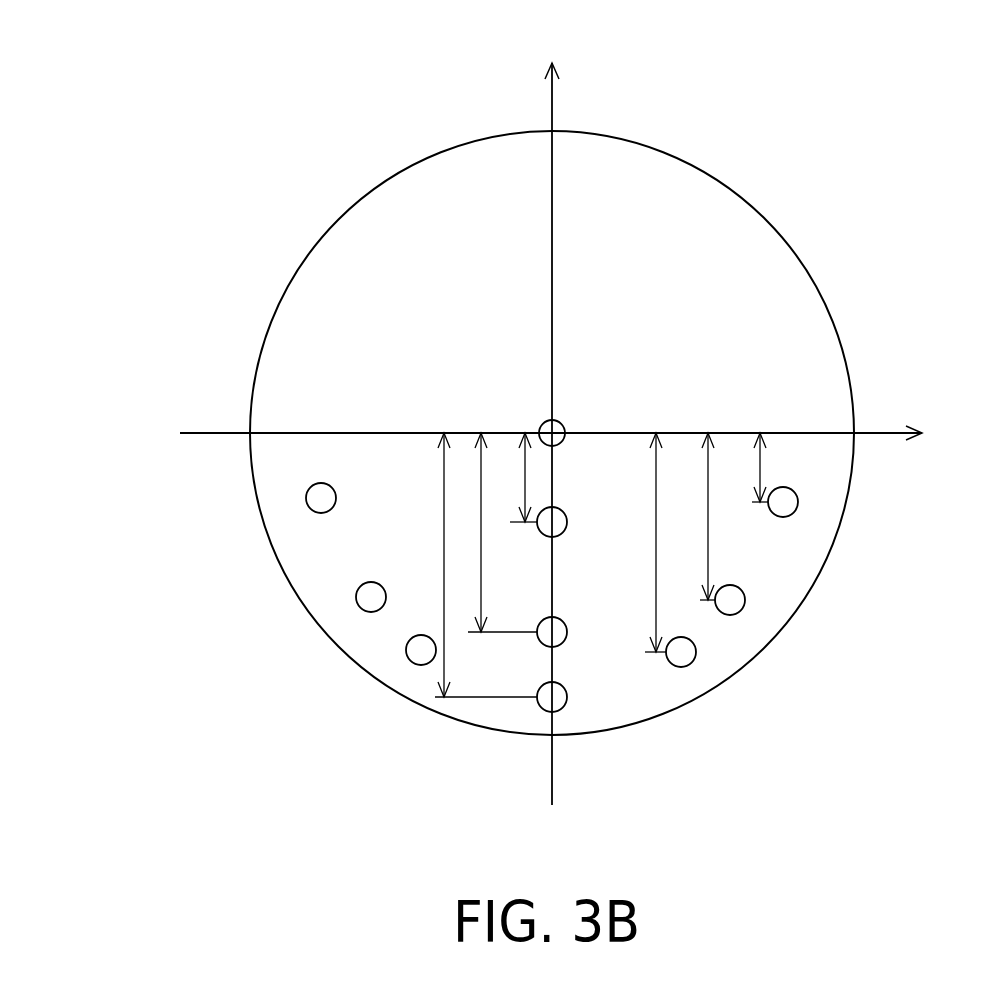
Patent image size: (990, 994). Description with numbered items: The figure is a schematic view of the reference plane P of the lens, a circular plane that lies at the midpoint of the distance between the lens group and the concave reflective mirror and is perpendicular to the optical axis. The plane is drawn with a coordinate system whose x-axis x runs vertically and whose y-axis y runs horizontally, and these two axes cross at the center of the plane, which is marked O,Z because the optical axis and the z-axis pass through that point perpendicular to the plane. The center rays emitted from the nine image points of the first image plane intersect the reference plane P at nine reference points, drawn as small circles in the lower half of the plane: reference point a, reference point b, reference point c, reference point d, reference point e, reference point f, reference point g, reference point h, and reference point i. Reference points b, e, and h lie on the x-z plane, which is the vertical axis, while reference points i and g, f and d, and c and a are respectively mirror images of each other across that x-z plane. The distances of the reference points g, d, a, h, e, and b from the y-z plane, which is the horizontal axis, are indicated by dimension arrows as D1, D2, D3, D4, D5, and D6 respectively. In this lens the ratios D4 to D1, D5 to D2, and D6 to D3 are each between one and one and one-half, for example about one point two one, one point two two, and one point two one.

The reference plane P is at (866, 792).
The x-axis x is at (552, 413).
The y-axis y is at (572, 440).
The optical axis and z-axis O,Z is at (563, 426).
The reference point a is at (672, 667).
The reference point b is at (567, 693).
The reference point c is at (405, 649).
The reference point d is at (744, 605).
The reference point e is at (567, 635).
The reference point f is at (356, 588).
The reference point g is at (799, 498).
The reference point h is at (567, 525).
The reference point i is at (306, 495).
The distance D1 is at (748, 467).
The distance D2 is at (695, 516).
The distance D3 is at (643, 542).
The distance D4 is at (514, 477).
The distance D5 is at (494, 532).
The distance D6 is at (472, 565).